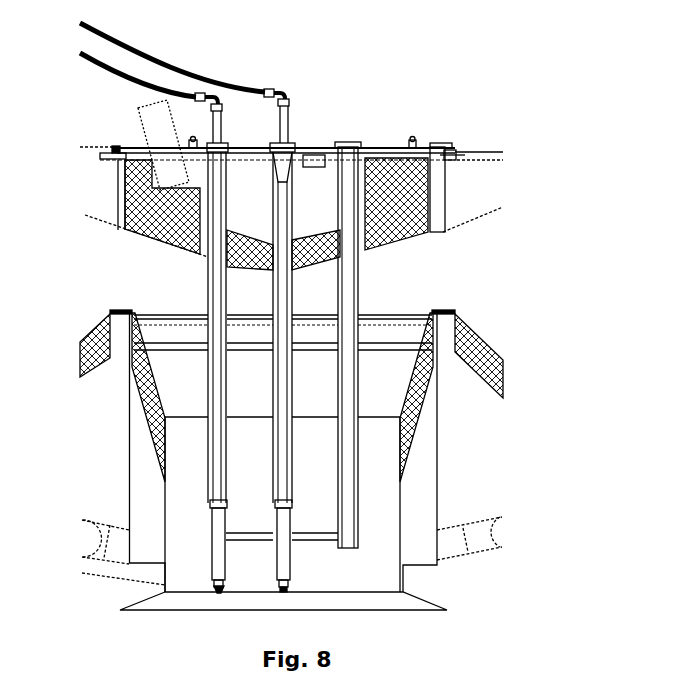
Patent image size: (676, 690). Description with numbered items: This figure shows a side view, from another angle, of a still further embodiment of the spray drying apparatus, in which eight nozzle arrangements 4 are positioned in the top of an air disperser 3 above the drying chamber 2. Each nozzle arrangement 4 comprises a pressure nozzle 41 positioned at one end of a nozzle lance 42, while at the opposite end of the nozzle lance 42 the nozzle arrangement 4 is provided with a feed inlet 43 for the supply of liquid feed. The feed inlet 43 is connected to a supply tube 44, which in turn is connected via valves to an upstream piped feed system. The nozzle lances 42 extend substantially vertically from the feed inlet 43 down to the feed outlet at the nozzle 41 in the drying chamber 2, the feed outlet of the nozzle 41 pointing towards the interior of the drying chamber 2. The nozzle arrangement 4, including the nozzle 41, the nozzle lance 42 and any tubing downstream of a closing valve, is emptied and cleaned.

The drying chamber 2 is at (418, 598).
The air disperser 3 is at (473, 148).
The nozzle arrangement 4 is at (178, 291).
The pressure nozzle 41 is at (215, 588).
The nozzle lance 42 is at (208, 478).
The feed inlet 43 is at (286, 118).
The supply tube 44 is at (155, 66).